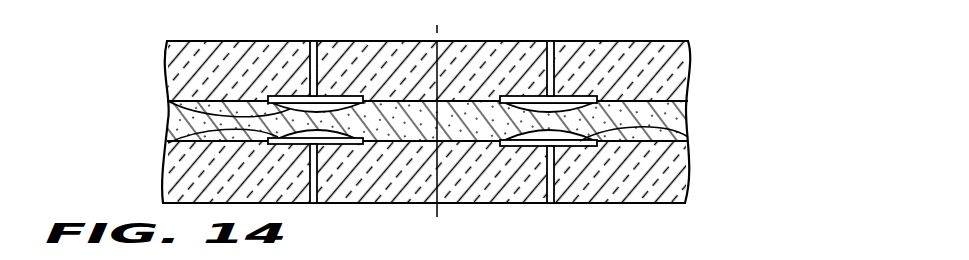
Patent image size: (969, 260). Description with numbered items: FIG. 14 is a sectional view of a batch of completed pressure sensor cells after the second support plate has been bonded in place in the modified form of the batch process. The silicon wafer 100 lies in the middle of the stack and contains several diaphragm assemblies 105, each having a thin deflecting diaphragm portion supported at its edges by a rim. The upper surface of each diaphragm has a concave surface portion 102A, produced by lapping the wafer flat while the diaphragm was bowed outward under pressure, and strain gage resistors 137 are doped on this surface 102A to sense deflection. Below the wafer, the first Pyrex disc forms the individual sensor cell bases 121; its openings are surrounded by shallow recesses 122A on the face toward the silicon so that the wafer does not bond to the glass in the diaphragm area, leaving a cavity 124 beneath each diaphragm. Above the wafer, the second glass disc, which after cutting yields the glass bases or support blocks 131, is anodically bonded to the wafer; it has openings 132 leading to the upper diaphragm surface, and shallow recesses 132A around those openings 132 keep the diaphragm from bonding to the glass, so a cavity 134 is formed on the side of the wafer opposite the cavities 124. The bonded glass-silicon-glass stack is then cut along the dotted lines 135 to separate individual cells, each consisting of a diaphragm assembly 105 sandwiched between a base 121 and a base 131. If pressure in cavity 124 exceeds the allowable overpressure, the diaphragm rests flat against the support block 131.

The silicon wafer 100 is at (687, 114).
The concave surface portion 102A is at (560, 137).
The diaphragm assembly 105 is at (167, 128).
The sensor cell 121 is at (472, 187).
The shallow recess 122A is at (168, 145).
The cavity 124 is at (557, 141).
The glass base 131 is at (672, 77).
The opening 132 is at (336, 38).
The shallow recess 132A is at (168, 100).
The cavity 134 is at (307, 105).
The dotted lines 135 is at (439, 52).
The strain gage resistors 137 is at (340, 101).